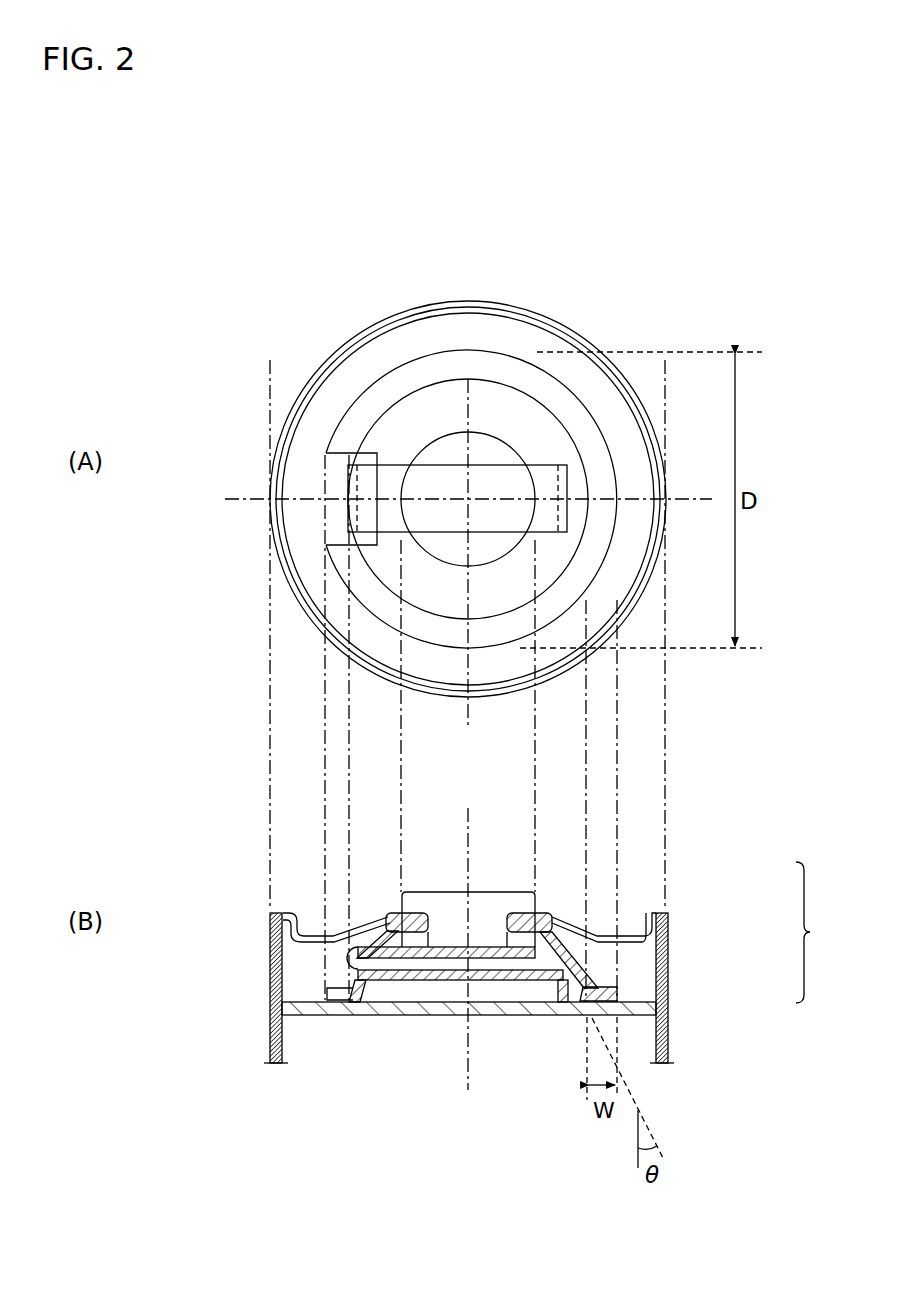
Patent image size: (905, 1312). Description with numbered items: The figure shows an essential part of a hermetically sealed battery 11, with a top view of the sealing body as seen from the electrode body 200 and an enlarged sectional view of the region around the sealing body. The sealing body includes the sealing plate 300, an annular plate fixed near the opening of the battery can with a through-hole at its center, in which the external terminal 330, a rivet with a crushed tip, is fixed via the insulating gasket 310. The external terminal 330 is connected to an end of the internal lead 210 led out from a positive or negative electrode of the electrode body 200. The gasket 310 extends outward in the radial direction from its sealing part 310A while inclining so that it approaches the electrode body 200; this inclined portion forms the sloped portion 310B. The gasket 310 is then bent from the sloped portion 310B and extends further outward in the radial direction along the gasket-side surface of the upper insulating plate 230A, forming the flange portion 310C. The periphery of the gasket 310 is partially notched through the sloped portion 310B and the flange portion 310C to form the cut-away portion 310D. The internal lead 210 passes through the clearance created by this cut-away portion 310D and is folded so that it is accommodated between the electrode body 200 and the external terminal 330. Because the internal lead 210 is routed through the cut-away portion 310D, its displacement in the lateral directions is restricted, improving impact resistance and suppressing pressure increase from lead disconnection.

The battery 11 is at (672, 228).
The electrode body 200 is at (638, 1044).
The internal lead 210 is at (422, 976).
The upper insulating plate 230A is at (663, 1011).
The sealing plate 300 is at (537, 350).
The gasket 310 is at (825, 932).
The sealing part 310A is at (562, 912).
The sloped portion 310B is at (420, 427).
The flange portion 310C is at (450, 368).
The cut-away portion 310D is at (334, 487).
The external terminal 330 is at (500, 453).